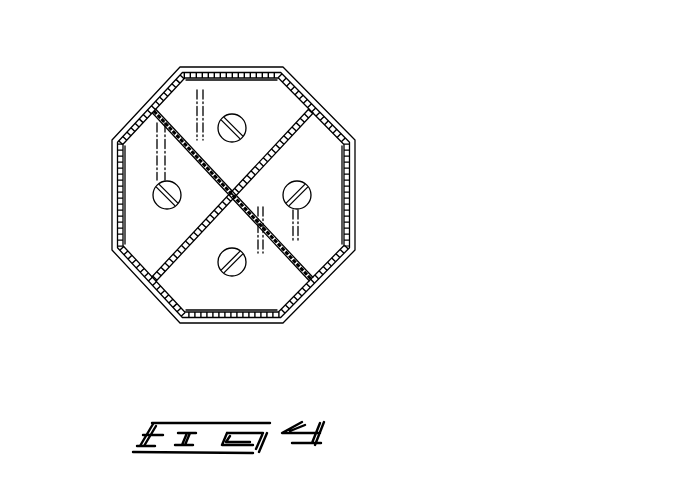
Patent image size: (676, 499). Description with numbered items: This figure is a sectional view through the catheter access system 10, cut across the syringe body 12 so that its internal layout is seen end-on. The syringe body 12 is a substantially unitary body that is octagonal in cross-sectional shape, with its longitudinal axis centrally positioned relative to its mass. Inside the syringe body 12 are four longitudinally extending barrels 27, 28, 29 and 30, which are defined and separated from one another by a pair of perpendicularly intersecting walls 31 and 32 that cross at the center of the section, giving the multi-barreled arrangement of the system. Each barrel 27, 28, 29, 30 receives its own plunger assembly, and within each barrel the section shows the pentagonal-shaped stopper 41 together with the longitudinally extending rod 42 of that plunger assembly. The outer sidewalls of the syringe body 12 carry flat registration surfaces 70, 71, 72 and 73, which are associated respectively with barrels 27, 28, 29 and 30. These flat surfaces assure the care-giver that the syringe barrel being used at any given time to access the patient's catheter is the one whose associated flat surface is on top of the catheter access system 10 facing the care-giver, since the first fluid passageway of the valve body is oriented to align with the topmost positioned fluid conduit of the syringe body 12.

The catheter access system 10 is at (384, 56).
The syringe body 12 is at (367, 232).
The barrel 27 is at (248, 103).
The barrel 28 is at (315, 163).
The barrel 29 is at (195, 280).
The barrel 30 is at (150, 238).
The wall 31 is at (282, 140).
The wall 32 is at (180, 124).
The stopper 41 is at (267, 104).
The rod 42 is at (226, 116).
The flat registration surface 70 is at (203, 74).
The flat registration surface 71 is at (345, 168).
The flat registration surface 72 is at (207, 313).
The flat registration surface 73 is at (115, 205).